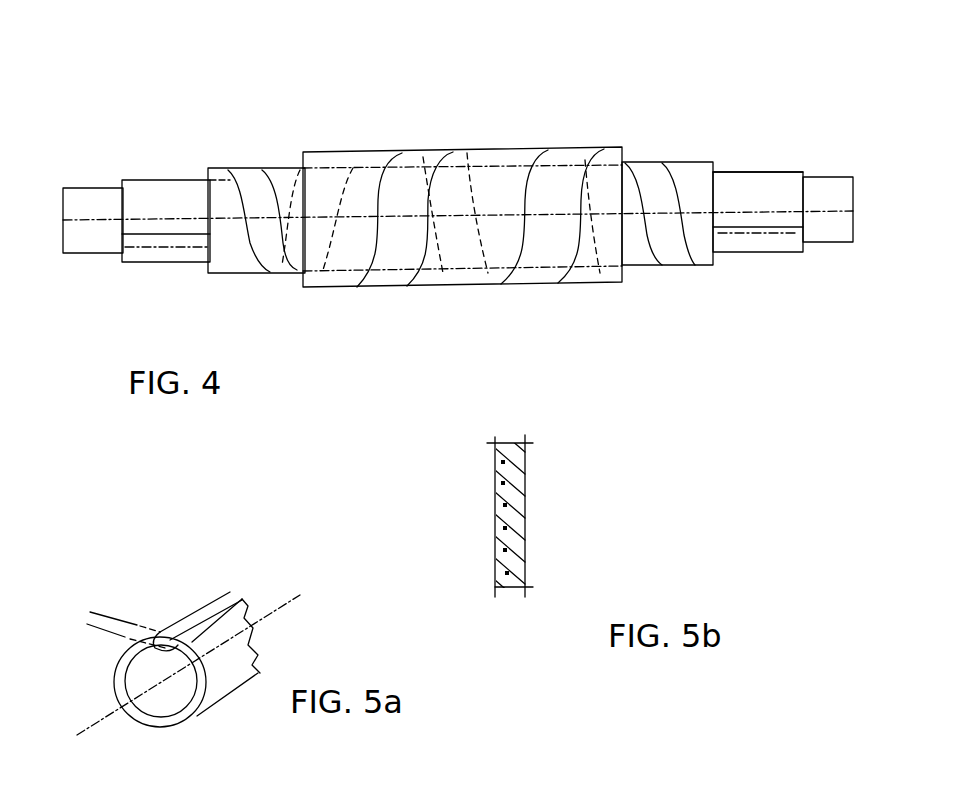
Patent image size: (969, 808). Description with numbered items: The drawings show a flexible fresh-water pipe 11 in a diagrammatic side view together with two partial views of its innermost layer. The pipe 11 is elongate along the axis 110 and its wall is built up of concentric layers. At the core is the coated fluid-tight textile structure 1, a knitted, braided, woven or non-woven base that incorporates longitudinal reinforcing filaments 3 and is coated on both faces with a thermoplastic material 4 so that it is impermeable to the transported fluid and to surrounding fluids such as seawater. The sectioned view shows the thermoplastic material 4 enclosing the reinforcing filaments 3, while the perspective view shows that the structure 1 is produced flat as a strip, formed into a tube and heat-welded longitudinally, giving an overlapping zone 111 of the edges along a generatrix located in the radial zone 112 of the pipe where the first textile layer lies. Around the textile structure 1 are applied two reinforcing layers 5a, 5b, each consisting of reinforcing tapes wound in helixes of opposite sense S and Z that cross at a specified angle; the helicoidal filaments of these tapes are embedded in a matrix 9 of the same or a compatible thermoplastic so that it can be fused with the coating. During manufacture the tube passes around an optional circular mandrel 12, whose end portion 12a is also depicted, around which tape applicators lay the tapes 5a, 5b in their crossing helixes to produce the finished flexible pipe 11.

In FIG. 4, the coated fluid-tight textile structure 1 is at (762, 170).
In FIG. 5a, the coated fluid-tight textile structure 1 is at (120, 664).
In FIG. 5b, the coated fluid-tight textile structure 1 is at (495, 577).
In FIG. 5b, the longitudinal reinforcing filaments 3 is at (495, 465).
In FIG. 4, the thermoplastic material 4 is at (750, 240).
In FIG. 5b, the thermoplastic material 4 is at (526, 503).
In FIG. 4, the reinforcing layer 5a is at (671, 257).
In FIG. 4, the reinforcing layer 5b is at (535, 268).
In FIG. 4, the matrix 9 is at (689, 167).
In FIG. 4, the pipe 11 is at (516, 142).
In FIG. 4, the circular mandrel 12 is at (93, 203).
In FIG. 4, the end segment 12a is at (148, 222).
In FIG. 4, the axis 110 is at (165, 306).
In FIG. 5a, the axis 110 is at (275, 600).
In FIG. 4, the overlapping zone 111 is at (182, 233).
In FIG. 5a, the overlapping zone 111 is at (195, 625).
In FIG. 5a, the radial zone 112 is at (103, 619).
In FIG. 4, the helix direction S is at (283, 170).
In FIG. 4, the helix direction Z is at (437, 162).